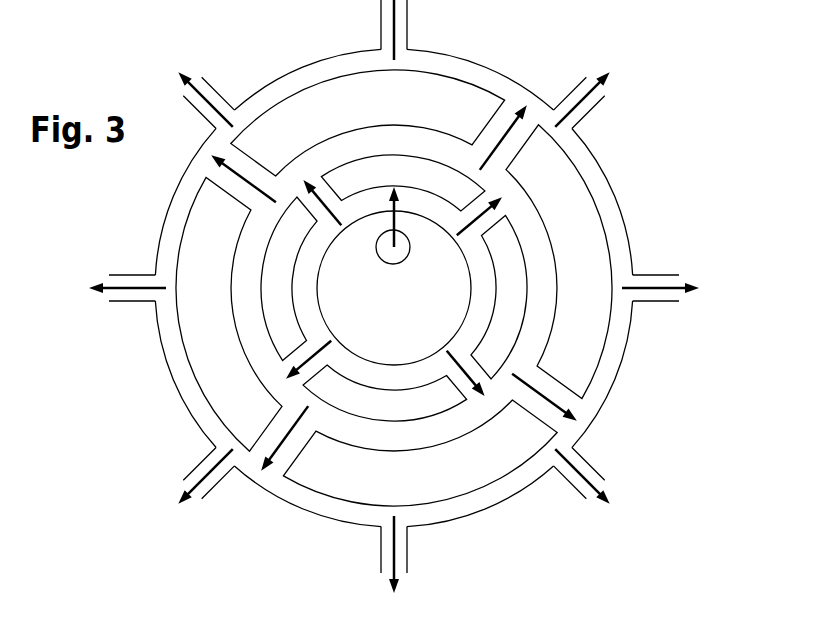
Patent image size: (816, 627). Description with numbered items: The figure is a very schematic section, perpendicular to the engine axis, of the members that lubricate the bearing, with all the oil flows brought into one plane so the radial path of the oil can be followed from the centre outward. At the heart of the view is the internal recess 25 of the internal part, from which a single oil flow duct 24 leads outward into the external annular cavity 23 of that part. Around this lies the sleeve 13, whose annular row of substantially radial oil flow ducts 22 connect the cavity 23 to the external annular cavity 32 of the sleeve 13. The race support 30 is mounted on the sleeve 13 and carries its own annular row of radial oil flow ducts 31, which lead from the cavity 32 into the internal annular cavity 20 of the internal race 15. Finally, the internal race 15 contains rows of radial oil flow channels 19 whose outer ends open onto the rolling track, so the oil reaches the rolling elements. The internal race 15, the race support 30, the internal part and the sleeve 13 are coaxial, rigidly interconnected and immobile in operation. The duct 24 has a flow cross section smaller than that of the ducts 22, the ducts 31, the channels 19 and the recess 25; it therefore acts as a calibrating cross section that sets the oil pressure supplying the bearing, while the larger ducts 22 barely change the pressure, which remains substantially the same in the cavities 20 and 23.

The sleeve 13 is at (394, 292).
The internal race 15 is at (394, 286).
The oil flow channels 19 is at (578, 75).
The internal annular cavity 20 is at (592, 175).
The oil flow ducts 22 is at (340, 183).
The external annular cavity 23 is at (307, 317).
The oil flow duct 24 is at (397, 224).
The internal recess 25 is at (394, 250).
The race support 30 is at (431, 312).
The oil flow ducts 31 is at (528, 140).
The external annular cavity 32 is at (428, 138).